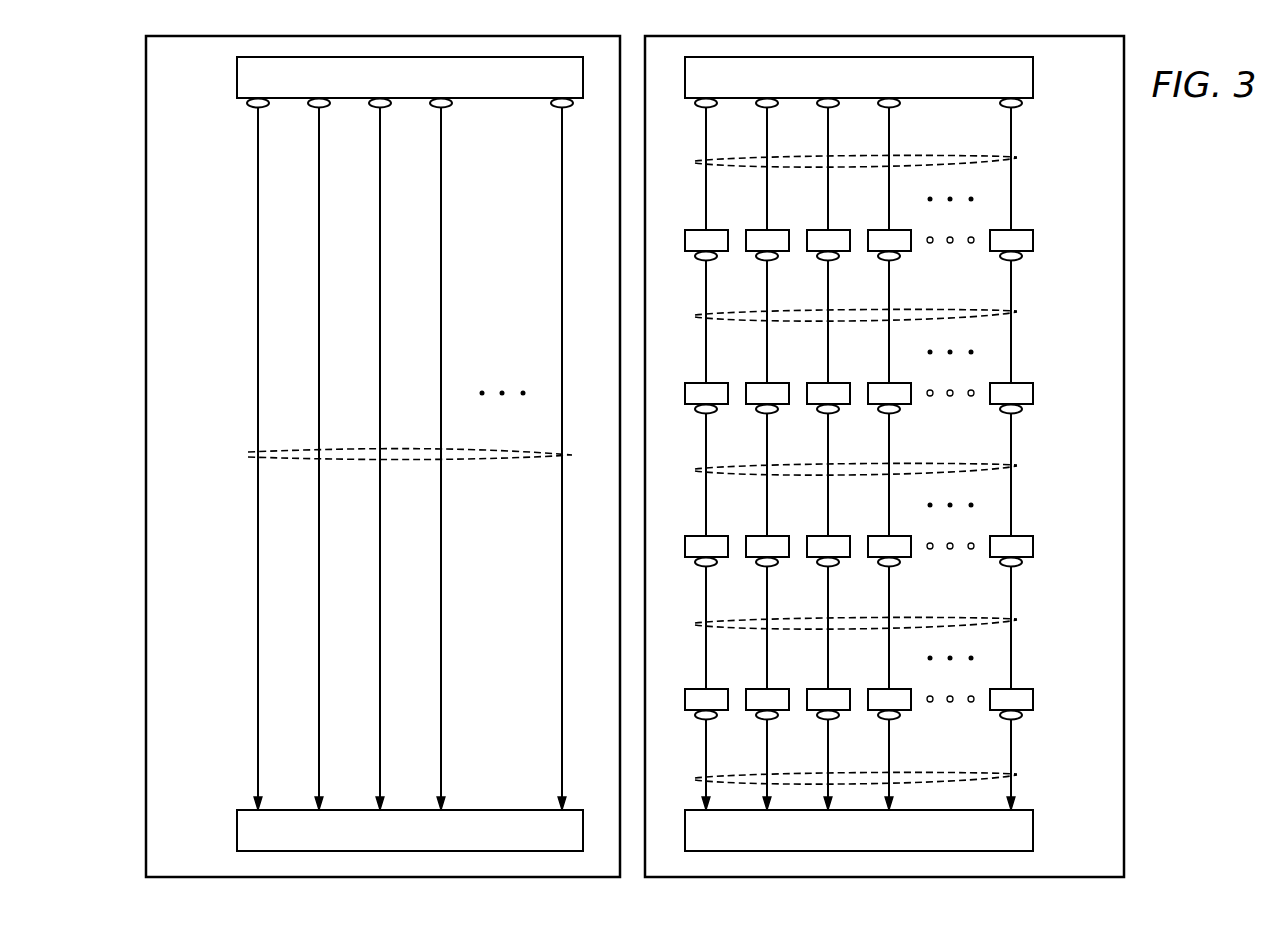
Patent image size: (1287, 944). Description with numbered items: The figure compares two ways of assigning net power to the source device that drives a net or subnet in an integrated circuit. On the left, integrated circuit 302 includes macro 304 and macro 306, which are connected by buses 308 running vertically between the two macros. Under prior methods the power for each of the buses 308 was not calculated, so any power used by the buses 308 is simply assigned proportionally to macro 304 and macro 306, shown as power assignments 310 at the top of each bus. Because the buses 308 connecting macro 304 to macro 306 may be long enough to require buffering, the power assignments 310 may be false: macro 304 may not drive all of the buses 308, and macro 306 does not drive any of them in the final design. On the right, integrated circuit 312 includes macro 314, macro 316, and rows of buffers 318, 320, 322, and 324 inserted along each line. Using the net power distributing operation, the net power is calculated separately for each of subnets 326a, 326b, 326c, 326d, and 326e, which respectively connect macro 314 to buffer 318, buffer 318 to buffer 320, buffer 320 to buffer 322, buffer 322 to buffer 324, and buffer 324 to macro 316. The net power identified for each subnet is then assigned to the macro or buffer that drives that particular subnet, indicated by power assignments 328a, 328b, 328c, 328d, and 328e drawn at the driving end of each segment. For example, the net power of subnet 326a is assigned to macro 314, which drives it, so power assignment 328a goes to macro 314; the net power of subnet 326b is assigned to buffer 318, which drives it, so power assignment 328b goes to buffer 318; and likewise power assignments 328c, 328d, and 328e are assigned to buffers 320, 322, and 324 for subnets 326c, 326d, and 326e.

The integrated circuit 302 is at (146, 300).
The macro 304 is at (237, 72).
The macro 306 is at (237, 832).
The buses 308 is at (248, 453).
The power assignments 310 is at (252, 108).
The integrated circuit 312 is at (1124, 300).
The macro 314 is at (1033, 72).
The macro 316 is at (1033, 832).
The buffer 318 is at (695, 230).
The buffer 320 is at (695, 383).
The buffer 322 is at (695, 536).
The buffer 324 is at (695, 689).
The subnet 326a is at (1020, 158).
The subnet 326b is at (1020, 312).
The subnet 326c is at (1020, 466).
The subnet 326d is at (1020, 620).
The subnet 326e is at (1020, 775).
The power assignment 328a is at (714, 107).
The power assignment 328b is at (714, 260).
The power assignment 328c is at (714, 413).
The power assignment 328d is at (714, 566).
The power assignment 328e is at (714, 719).